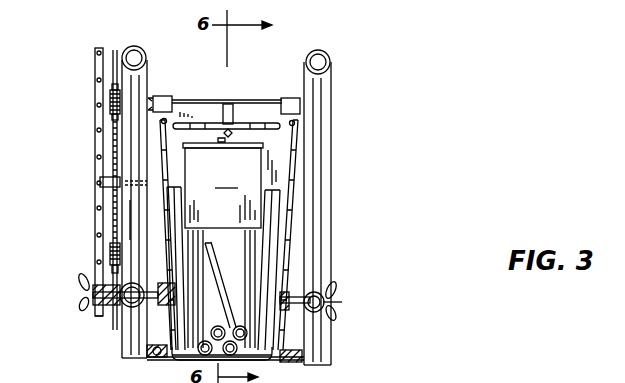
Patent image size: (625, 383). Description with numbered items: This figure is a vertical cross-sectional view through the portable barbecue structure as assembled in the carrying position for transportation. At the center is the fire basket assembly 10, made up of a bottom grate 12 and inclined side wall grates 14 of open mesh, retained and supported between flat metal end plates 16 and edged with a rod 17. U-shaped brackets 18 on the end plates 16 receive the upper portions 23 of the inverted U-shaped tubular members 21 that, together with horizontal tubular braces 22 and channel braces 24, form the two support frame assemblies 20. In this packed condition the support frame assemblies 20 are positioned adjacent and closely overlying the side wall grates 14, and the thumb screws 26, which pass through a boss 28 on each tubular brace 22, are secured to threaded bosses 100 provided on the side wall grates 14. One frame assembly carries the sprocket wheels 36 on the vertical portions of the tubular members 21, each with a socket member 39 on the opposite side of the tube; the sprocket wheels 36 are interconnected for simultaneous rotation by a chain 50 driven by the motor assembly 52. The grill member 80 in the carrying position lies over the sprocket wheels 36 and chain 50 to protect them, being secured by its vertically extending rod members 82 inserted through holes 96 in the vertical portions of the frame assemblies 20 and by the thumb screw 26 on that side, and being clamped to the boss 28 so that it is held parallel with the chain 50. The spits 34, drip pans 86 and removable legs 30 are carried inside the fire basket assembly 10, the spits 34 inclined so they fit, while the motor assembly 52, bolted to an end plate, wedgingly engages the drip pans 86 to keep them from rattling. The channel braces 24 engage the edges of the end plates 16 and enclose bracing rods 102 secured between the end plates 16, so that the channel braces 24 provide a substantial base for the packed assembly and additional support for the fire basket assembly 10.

The fire basket assembly 10 is at (302, 172).
The bottom grate 12 is at (190, 352).
The side wall grates 14 is at (284, 218).
The end plates 16 is at (256, 100).
The rod 17 is at (295, 122).
The U-shaped brackets 18 is at (300, 105).
The support frame assemblies 20 is at (334, 56).
The tubular members 21 is at (130, 217).
The horizontal tubular braces 22 is at (133, 306).
The upper portions 23 is at (133, 50).
The channel braces 24 is at (293, 367).
The thumb screw 26 is at (82, 302).
The boss 28 is at (95, 275).
The removable legs 30 is at (240, 330).
The spits 34 is at (208, 258).
The sprocket wheels 36 is at (110, 101).
The socket member 39 is at (157, 97).
The chain 50 is at (113, 137).
The motor assembly 52 is at (229, 183).
The grill member 80 is at (97, 153).
The rod members 82 is at (108, 180).
The drip pans 86 is at (280, 238).
The holes 96 is at (118, 186).
The threaded bosses 100 is at (160, 303).
The bracing rods 102 is at (150, 356).